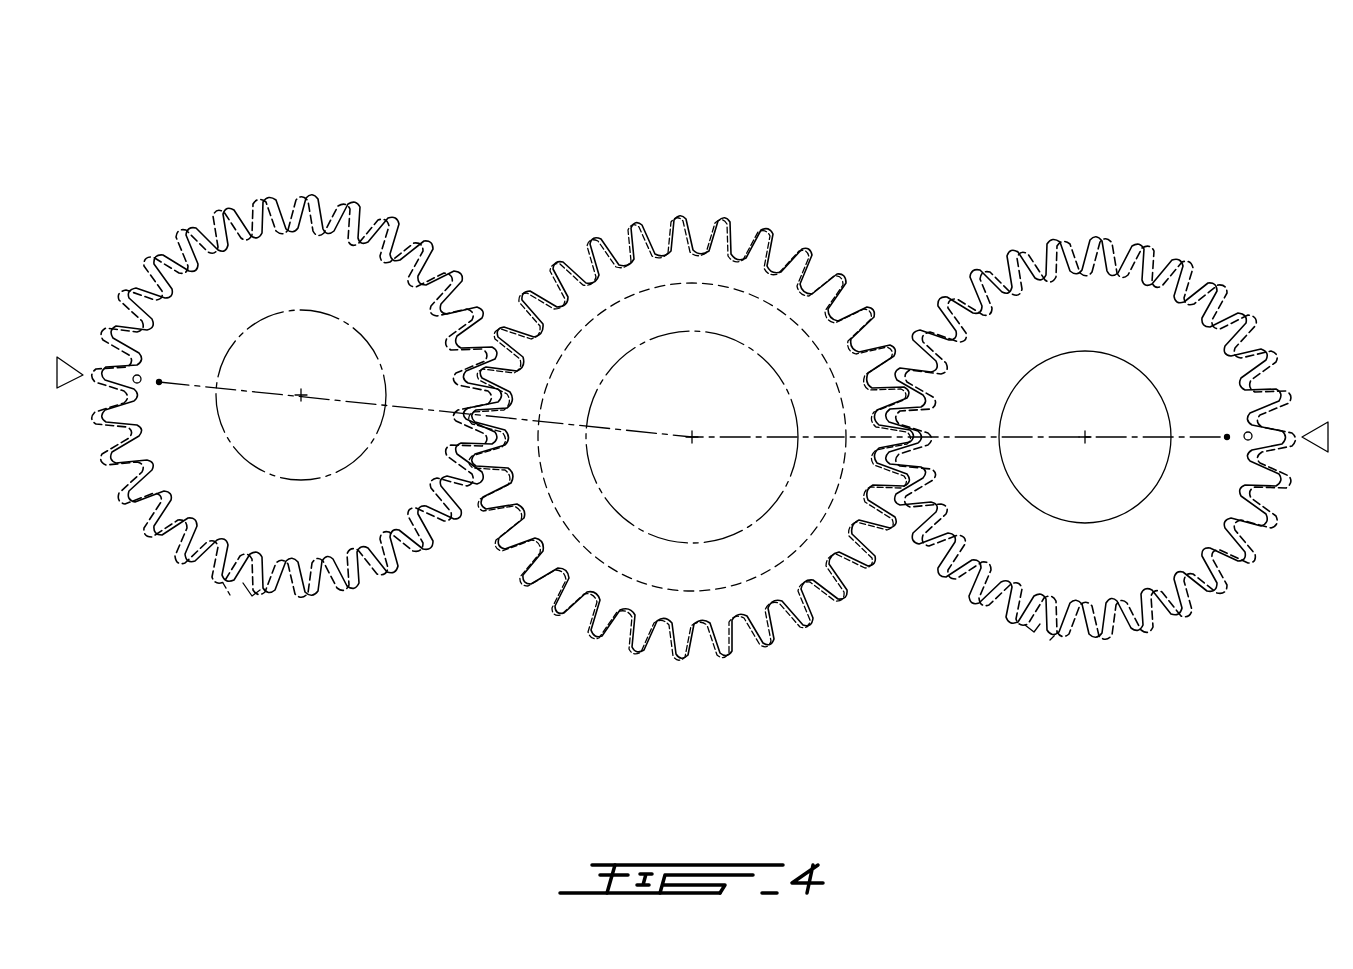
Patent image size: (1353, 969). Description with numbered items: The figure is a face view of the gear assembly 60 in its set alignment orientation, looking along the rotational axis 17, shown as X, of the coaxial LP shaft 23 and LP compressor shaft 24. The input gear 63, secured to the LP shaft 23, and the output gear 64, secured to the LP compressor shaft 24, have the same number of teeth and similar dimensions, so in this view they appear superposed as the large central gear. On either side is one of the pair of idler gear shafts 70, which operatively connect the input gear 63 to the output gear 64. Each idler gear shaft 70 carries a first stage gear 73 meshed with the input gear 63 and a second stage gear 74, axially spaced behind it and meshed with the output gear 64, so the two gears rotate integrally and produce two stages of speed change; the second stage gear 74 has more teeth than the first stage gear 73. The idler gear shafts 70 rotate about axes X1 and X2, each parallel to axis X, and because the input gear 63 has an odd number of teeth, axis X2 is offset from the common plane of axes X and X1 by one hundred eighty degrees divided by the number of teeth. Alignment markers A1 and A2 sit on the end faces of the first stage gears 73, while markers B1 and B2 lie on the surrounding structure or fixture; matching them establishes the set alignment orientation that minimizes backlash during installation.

The idler gear shaft 70 is at (303, 152).
The gear assembly 60 is at (691, 477).
The input gear 63 is at (678, 215).
The output gear 64 is at (603, 258).
The LP compressor shaft 24 is at (773, 303).
The LP shaft 23 is at (745, 347).
The rotational axis 17 is at (692, 442).
The first stage gear 73 is at (243, 583).
The second stage gear 74 is at (223, 583).
The rotational axis of first idler gear shaft X1 is at (301, 390).
The rotational axis of second idler gear shaft X2 is at (1085, 432).
The alignment marker A1 is at (139, 383).
The alignment marker A2 is at (1245, 440).
The alignment marker B1 is at (73, 358).
The alignment marker B2 is at (1313, 453).